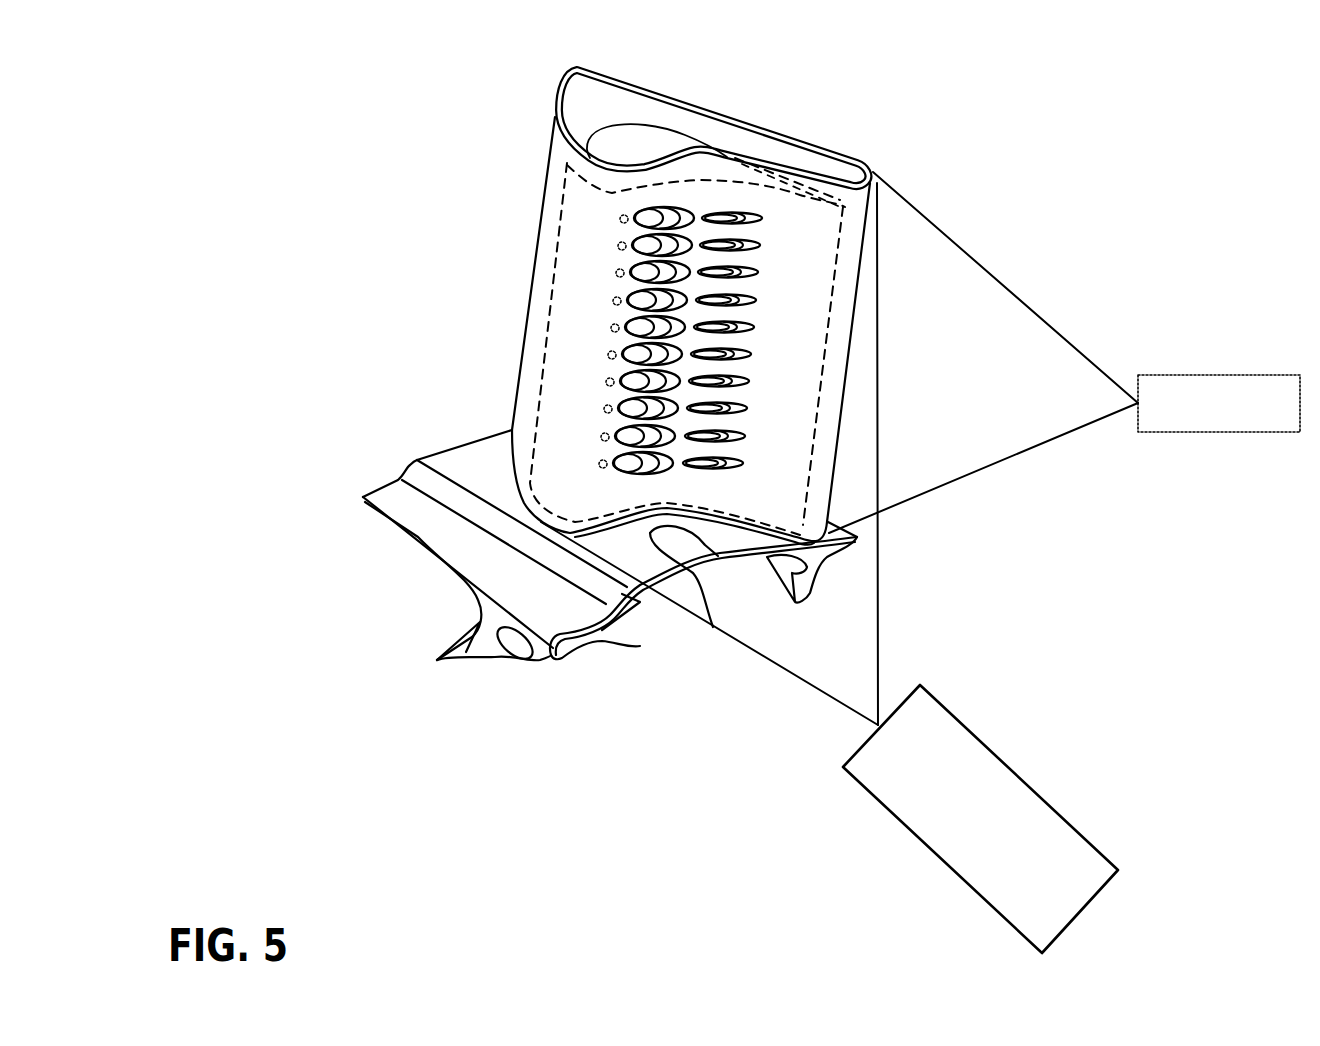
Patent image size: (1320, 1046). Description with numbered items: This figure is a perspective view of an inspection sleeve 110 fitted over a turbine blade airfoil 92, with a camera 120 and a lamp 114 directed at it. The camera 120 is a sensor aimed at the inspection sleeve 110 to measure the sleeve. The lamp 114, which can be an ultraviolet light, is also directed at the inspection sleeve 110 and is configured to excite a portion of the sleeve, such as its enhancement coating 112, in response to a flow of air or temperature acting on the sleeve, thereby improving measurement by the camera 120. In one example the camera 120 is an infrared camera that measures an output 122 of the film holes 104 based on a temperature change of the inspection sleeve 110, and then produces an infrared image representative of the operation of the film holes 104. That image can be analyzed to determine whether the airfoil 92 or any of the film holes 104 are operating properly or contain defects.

The airfoil 92 is at (611, 128).
The film holes 104 is at (698, 209).
The inspection sleeve 110 is at (732, 98).
The enhancement coating 112 is at (782, 148).
The lamp 114 is at (990, 835).
The camera 120 is at (1238, 412).
The output 122 is at (640, 291).